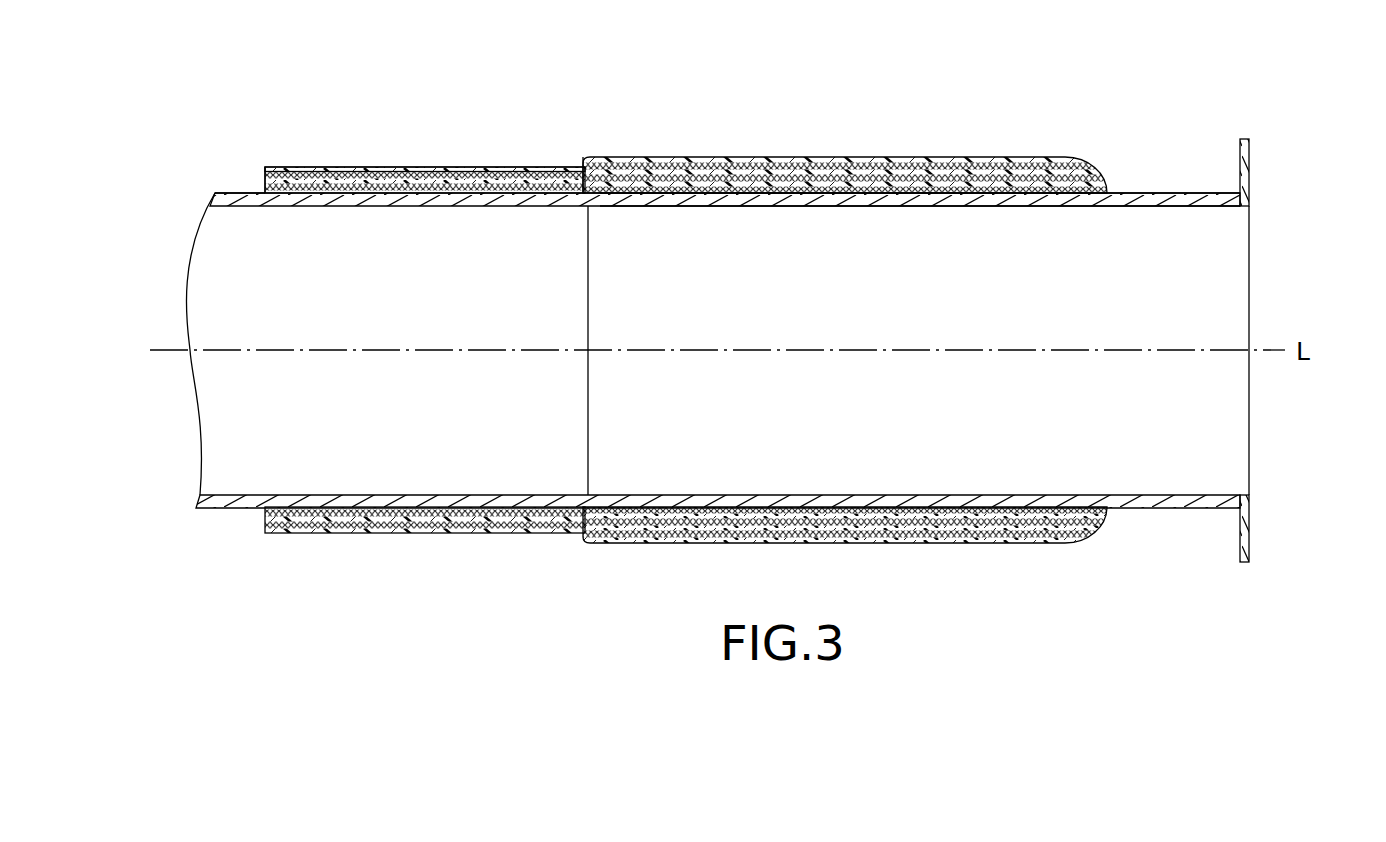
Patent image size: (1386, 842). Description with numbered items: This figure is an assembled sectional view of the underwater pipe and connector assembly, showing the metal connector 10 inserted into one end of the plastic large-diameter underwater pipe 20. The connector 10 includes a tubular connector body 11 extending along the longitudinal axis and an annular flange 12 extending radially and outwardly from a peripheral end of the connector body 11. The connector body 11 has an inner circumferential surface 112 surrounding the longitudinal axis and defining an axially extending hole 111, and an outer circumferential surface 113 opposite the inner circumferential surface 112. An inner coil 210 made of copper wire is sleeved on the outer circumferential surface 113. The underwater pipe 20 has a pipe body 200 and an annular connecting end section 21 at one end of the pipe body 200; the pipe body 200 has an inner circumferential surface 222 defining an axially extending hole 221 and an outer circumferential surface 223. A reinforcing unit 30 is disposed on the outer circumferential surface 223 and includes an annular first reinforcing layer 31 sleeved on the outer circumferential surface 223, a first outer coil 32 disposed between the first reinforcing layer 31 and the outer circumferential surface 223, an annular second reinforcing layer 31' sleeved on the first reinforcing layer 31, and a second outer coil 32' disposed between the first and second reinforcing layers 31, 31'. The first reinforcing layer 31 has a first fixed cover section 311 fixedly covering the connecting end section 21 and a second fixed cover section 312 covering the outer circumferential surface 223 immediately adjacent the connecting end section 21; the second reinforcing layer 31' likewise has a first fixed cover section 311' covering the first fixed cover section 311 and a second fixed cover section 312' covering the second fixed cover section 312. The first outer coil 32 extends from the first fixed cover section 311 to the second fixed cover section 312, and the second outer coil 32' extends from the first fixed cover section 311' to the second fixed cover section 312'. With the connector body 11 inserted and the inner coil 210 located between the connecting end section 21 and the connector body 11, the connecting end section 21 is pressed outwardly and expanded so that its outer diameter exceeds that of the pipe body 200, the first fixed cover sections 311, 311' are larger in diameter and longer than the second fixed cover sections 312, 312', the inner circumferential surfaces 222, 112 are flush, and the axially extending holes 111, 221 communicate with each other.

The connector 10 is at (756, 317).
The connector body 11 is at (756, 298).
The annular flange 12 is at (1250, 150).
The axially extending hole 111 is at (1143, 270).
The inner circumferential surface 112 is at (977, 200).
The outer circumferential surface 113 is at (1130, 193).
The large-diameter underwater pipe 20 is at (536, 300).
The pipe body 200 is at (243, 193).
The connecting end section 21 is at (612, 306).
The inner coil 210 is at (873, 182).
The axially extending hole 221 is at (222, 431).
The inner circumferential surface 222 is at (377, 212).
The outer circumferential surface 223 is at (252, 193).
The reinforcing unit 30 is at (848, 284).
The first reinforcing layer 31 is at (848, 115).
The second reinforcing layer 31' is at (848, 135).
The first fixed cover section 311 is at (848, 115).
The first fixed cover section 311' is at (848, 119).
The second fixed cover section 312 is at (425, 148).
The second fixed cover section 312' is at (425, 129).
The first outer coil 32 is at (646, 137).
The second outer coil 32' is at (848, 97).